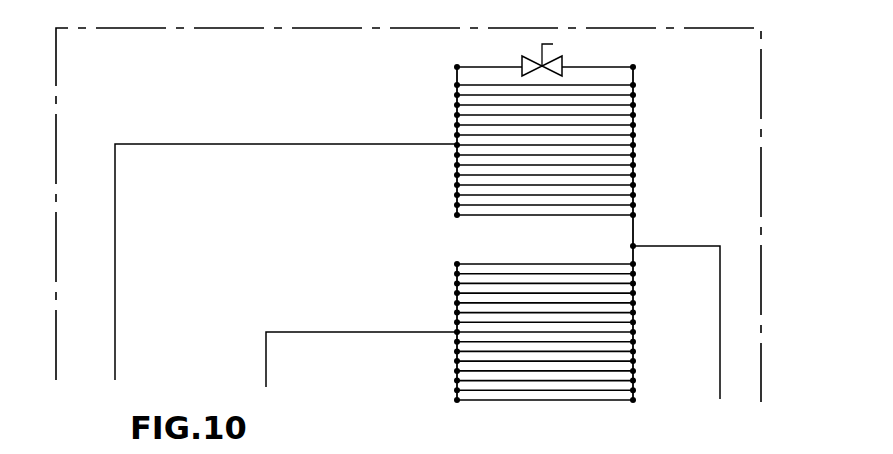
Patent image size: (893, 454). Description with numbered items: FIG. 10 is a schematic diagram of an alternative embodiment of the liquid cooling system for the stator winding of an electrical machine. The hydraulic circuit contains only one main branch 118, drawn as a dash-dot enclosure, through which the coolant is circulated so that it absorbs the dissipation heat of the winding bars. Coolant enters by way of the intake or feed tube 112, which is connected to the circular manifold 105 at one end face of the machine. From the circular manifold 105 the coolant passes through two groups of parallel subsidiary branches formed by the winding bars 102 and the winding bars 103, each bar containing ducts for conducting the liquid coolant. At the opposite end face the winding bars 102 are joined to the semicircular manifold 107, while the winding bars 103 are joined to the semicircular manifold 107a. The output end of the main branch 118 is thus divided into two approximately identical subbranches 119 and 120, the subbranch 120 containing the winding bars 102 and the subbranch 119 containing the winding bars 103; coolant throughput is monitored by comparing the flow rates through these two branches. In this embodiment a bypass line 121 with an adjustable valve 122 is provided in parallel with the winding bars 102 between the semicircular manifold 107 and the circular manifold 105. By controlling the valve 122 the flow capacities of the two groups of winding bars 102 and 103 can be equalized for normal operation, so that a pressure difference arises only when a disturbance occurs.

The winding bars 102 is at (580, 203).
The winding bars 103 is at (530, 269).
The circular manifold 105 is at (633, 373).
The semicircular manifold 107 is at (457, 106).
The semicircular manifold 107a is at (457, 371).
The intake or feed tube 112 is at (660, 244).
The main branch 118 is at (808, 141).
The subbranch 119 is at (303, 323).
The subbranch 120 is at (291, 136).
The bypass line 121 is at (496, 67).
The adjustable valve 122 is at (561, 62).